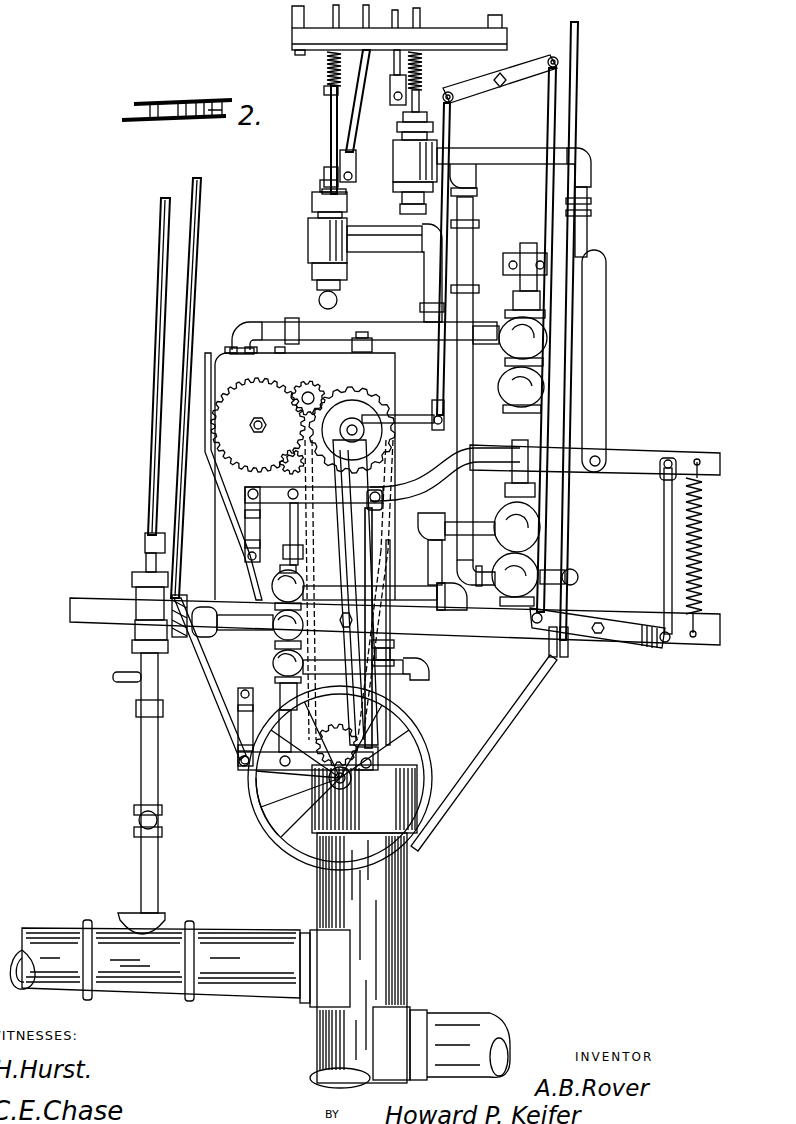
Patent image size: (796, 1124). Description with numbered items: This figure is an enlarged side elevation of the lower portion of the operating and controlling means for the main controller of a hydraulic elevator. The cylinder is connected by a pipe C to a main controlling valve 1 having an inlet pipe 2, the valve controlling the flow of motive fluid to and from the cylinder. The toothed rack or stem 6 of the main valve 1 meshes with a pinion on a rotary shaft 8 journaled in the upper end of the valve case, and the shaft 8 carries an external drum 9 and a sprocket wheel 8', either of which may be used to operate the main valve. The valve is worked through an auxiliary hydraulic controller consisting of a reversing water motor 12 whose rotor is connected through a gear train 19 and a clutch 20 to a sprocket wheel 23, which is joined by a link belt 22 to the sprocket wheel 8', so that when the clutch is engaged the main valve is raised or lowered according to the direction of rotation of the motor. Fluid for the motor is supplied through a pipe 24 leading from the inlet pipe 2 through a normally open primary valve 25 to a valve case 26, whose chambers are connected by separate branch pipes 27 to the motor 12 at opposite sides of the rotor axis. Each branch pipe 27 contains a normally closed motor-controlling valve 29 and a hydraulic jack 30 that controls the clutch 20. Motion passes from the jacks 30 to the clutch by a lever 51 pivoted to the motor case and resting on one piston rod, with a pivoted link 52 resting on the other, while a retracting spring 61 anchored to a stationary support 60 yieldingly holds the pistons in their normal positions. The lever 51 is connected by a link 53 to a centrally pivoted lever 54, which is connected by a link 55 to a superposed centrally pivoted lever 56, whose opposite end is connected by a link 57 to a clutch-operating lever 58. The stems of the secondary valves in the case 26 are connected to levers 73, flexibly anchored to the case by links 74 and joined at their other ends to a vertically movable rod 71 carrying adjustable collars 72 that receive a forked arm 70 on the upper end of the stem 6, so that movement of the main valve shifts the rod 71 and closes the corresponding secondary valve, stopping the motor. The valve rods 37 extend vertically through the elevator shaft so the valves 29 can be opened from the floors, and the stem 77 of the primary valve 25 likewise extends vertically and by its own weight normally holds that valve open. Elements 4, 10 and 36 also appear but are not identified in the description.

The main controlling valve 1 is at (400, 945).
The inlet pipe 2 is at (233, 938).
The branch pipe 4 is at (228, 622).
The toothed rack 6 is at (378, 738).
The rotary shaft 8 is at (344, 789).
The sprocket wheel 8' is at (245, 806).
The external drum 9 is at (268, 828).
The rods 10 is at (199, 235).
The reversing water motor 12 is at (217, 452).
The gear train 19 is at (283, 381).
The clutch 20 is at (367, 438).
The link belt 22 is at (403, 702).
The sprocket wheel 23 is at (358, 410).
The pipe 24 is at (155, 876).
The primary valve 25 is at (132, 594).
The valve case 26 is at (272, 636).
The branch pipes 27 is at (480, 162).
The motor-controlling valve 29 is at (400, 162).
The hydraulic jack 30 is at (528, 338).
The link 36 is at (396, 62).
The valve rods 37 is at (421, 17).
The lever 51 is at (630, 452).
The pivoted link 52 is at (604, 380).
The link 53 is at (662, 556).
The centrally pivoted lever 54 is at (623, 633).
The link 55 is at (568, 193).
The superposed centrally pivoted lever 56 is at (523, 68).
The link 57 is at (468, 205).
The clutch-operating lever 58 is at (400, 424).
The stationary support 60 is at (707, 640).
The retracting spring 61 is at (701, 546).
The forked arm 70 is at (397, 648).
The vertically movable rod 71 is at (368, 567).
The adjustable collars 72 is at (372, 649).
The levers 73 is at (277, 489).
The links 74 is at (248, 528).
The stem 77 is at (158, 318).
The pipe C is at (468, 1018).